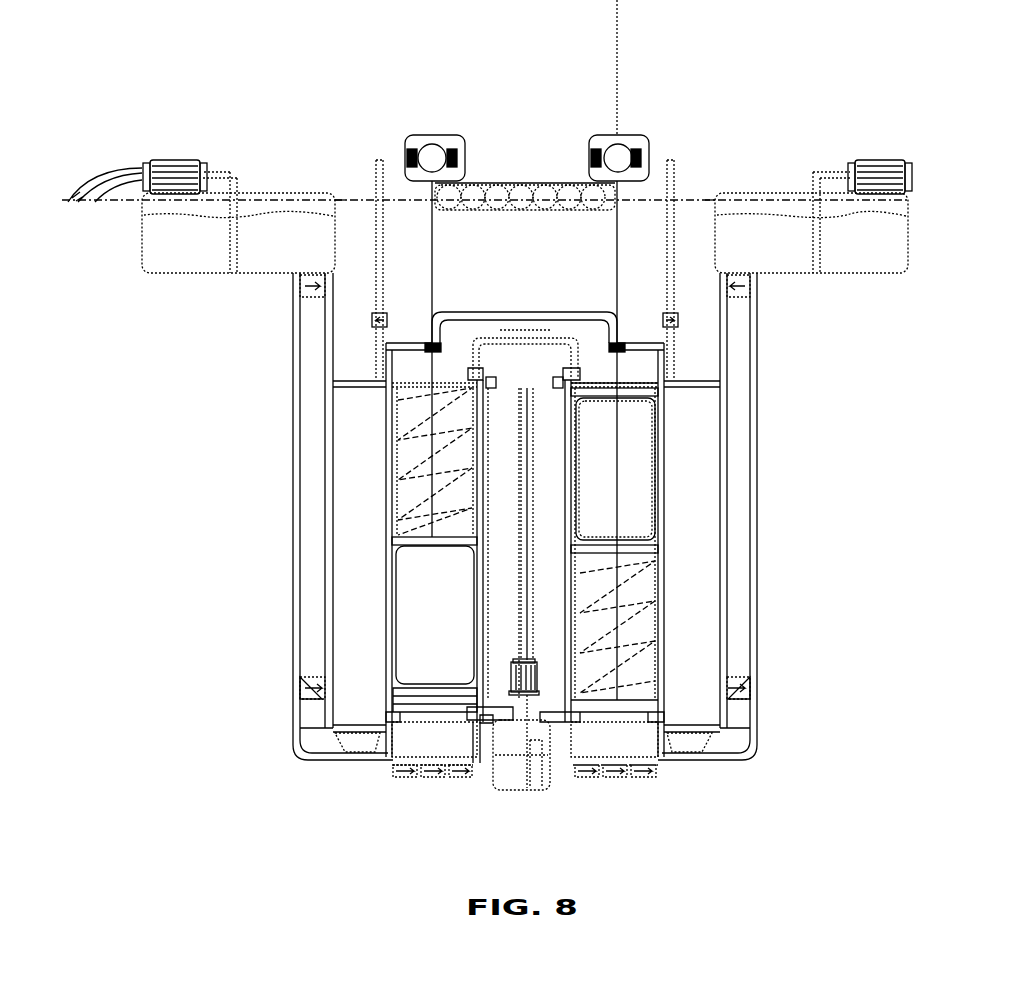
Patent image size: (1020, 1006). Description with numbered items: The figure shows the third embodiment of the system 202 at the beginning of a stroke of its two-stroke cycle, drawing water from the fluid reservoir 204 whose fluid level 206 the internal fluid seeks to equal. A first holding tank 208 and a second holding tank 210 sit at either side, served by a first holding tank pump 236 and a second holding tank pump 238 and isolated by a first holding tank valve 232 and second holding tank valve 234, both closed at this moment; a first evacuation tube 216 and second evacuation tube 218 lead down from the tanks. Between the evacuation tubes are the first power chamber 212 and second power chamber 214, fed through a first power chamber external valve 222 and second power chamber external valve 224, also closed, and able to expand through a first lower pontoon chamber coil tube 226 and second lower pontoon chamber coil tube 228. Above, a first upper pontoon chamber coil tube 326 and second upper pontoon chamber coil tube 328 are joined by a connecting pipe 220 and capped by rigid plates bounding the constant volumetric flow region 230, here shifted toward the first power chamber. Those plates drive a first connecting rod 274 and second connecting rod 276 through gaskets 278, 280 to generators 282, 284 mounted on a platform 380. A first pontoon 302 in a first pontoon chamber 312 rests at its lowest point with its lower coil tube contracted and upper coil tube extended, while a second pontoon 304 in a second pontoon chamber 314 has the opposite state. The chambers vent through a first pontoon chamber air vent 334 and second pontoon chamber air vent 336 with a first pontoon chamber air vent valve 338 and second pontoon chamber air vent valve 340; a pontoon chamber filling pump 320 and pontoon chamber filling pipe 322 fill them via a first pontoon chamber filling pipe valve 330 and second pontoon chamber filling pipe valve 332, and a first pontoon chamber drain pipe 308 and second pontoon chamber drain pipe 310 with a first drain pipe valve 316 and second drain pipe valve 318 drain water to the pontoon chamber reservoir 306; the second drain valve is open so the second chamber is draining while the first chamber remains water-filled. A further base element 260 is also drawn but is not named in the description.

The system 202 is at (302, 890).
The fluid reservoir 204 is at (348, 200).
The fluid level 206 is at (712, 195).
The first holding tank 208 is at (142, 247).
The second holding tank 210 is at (907, 235).
The first power chamber 212 is at (410, 745).
The second power chamber 214 is at (563, 762).
The first evacuation tube 216 is at (292, 512).
The second evacuation tube 218 is at (758, 496).
The connecting pipe 220 is at (477, 310).
The first power chamber external valve 222 is at (421, 780).
The second power chamber external valve 224 is at (612, 780).
The first lower pontoon chamber coil tube 226 is at (383, 695).
The second lower pontoon chamber coil tube 228 is at (645, 613).
The constant volumetric flow region 230 is at (588, 332).
The first holding tank valve 232 is at (292, 288).
The second holding tank valve 234 is at (760, 287).
The first holding tank pump 236 is at (185, 158).
The second holding tank pump 238 is at (890, 158).
The support foot 260 is at (360, 748).
The first connecting rod 274 is at (435, 244).
The second connecting rod 276 is at (616, 226).
The gasket 278 is at (428, 344).
The gasket 280 is at (622, 344).
The generator 282 is at (425, 135).
The generator 284 is at (590, 135).
The first pontoon 302 is at (415, 616).
The second pontoon 304 is at (612, 466).
The pontoon chamber reservoir 306 is at (513, 792).
The first pontoon chamber drain pipe 308 is at (503, 700).
The second pontoon chamber drain pipe 310 is at (552, 703).
The first pontoon chamber 312 is at (395, 545).
The second pontoon chamber 314 is at (656, 546).
The first drain pipe valve 316 is at (502, 714).
The second drain pipe valve 318 is at (570, 718).
The pontoon chamber filling pump 320 is at (514, 658).
The pontoon chamber filling pipe 322 is at (534, 588).
The first upper pontoon chamber coil tube 326 is at (410, 466).
The second upper pontoon chamber coil tube 328 is at (625, 392).
The first pontoon chamber filling pipe valve 330 is at (492, 388).
The second pontoon chamber filling pipe valve 332 is at (553, 378).
The first pontoon chamber air vent 334 is at (378, 158).
The second pontoon chamber air vent 336 is at (682, 270).
The first pontoon chamber air vent valve 338 is at (371, 320).
The second pontoon chamber air vent valve 340 is at (679, 322).
The platform 380 is at (537, 183).